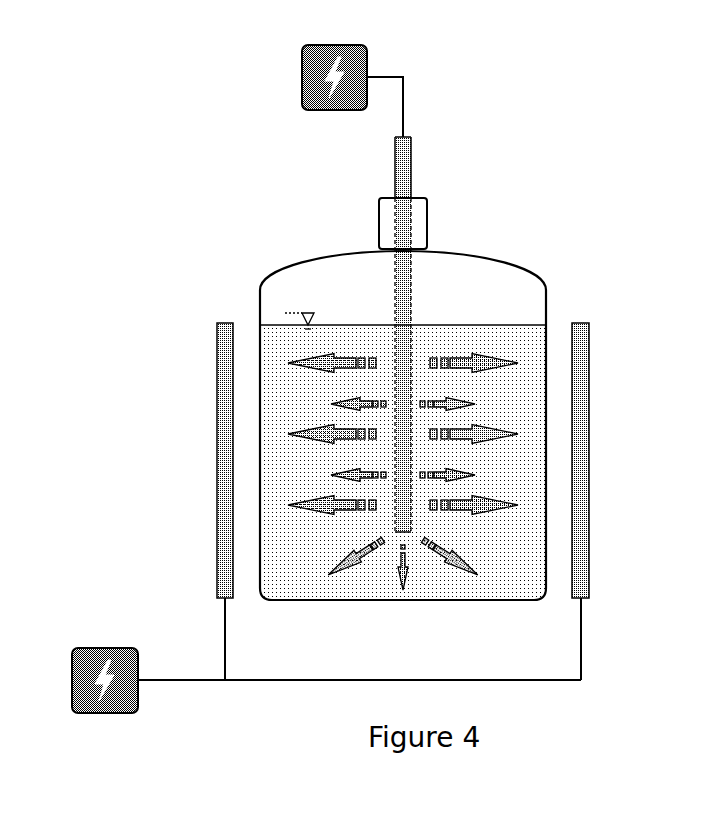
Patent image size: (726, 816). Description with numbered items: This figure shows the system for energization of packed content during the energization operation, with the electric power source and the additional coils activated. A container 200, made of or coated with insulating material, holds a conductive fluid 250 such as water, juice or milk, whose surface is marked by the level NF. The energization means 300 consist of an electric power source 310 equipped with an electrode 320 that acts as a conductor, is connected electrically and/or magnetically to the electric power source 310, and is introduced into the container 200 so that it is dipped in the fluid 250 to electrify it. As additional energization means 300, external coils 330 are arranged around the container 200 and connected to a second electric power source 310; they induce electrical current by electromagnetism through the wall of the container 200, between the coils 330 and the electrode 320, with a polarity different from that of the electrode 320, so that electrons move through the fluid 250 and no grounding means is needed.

The container 200 is at (356, 251).
The fluid 250 is at (487, 329).
The energization means 300 is at (405, 108).
The electric power source 310 is at (302, 78).
The electrode 320 is at (409, 295).
The external coils 330 is at (216, 408).
The liquid level NF is at (307, 316).